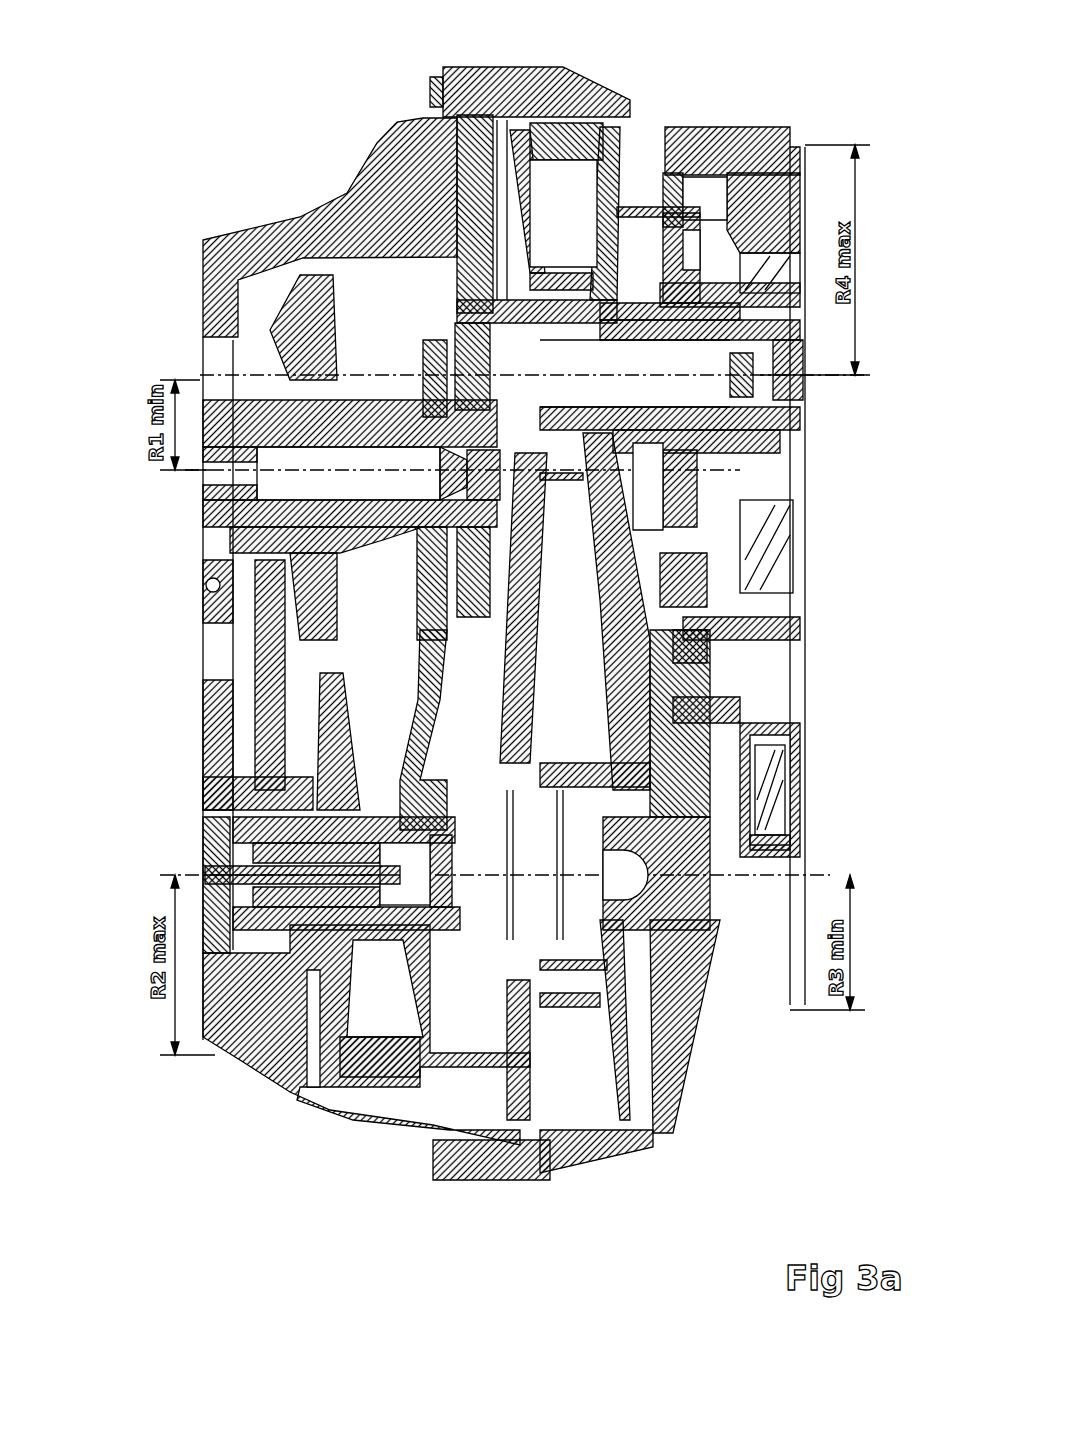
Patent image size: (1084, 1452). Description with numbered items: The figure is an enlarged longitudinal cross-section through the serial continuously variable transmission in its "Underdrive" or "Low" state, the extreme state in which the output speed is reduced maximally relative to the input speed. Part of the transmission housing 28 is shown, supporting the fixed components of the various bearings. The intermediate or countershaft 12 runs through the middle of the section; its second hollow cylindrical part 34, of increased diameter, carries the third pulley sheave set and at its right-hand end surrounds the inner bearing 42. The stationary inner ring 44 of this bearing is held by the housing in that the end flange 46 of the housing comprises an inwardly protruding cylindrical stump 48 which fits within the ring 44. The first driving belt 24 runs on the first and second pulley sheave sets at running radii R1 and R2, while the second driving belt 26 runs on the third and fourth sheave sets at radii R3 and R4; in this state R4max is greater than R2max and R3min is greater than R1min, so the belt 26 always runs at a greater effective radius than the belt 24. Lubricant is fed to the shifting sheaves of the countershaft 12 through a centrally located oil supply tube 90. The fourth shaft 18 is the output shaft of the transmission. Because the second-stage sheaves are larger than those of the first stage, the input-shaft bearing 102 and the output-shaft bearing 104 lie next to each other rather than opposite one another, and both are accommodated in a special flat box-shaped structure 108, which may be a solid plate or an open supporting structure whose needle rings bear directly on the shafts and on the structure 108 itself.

The intermediate or countershaft 12 is at (323, 968).
The fourth shaft 18 is at (782, 412).
The first driving belt 24 is at (380, 1067).
The second driving belt 26 is at (628, 100).
The transmission housing 28 is at (220, 245).
The second hollow cylindrical part 34 is at (620, 977).
The inner bearing 42 is at (710, 780).
The stationary inner ring 44 is at (710, 810).
The end flange 46 is at (713, 677).
The cylindrical stump 48 is at (713, 835).
The oil supply tube 90 is at (215, 862).
The bearing 102 is at (237, 546).
The bearing 104 is at (453, 307).
The flat box-shaped structure 108 is at (562, 70).